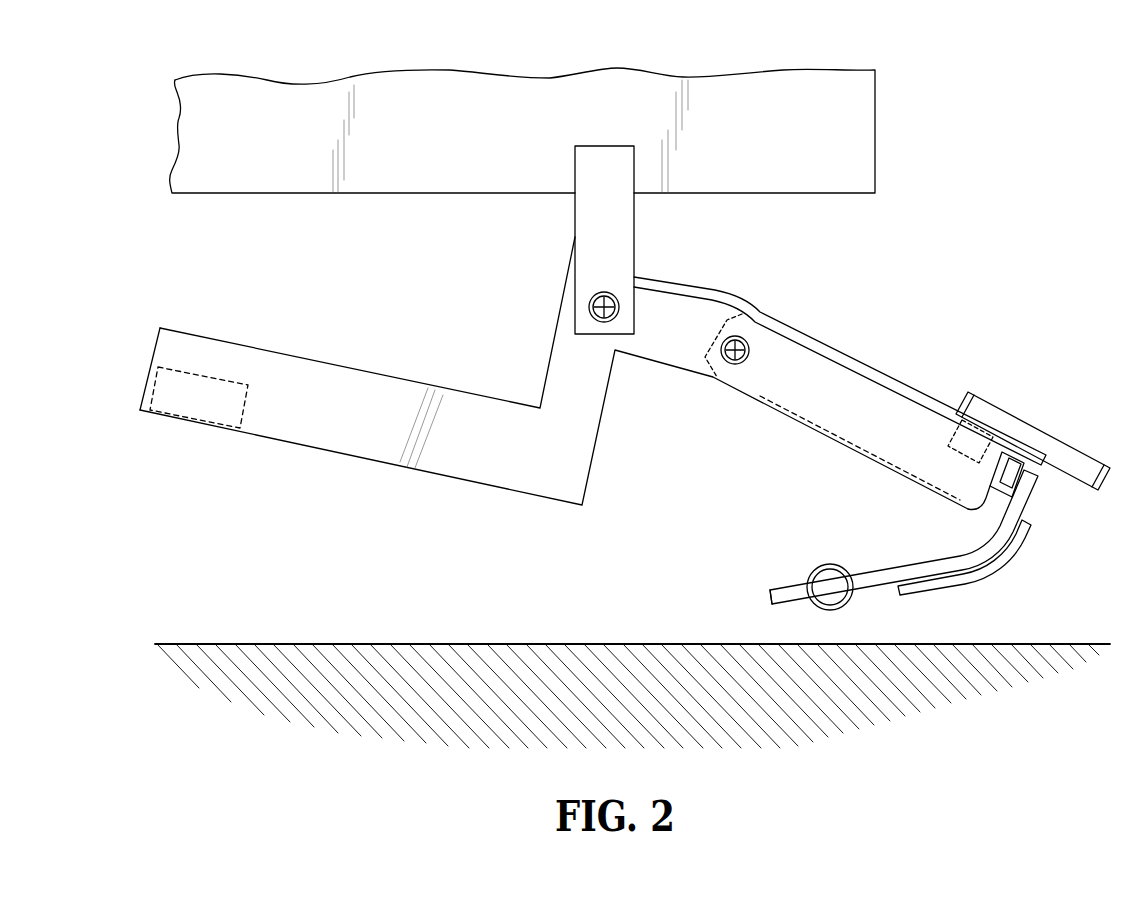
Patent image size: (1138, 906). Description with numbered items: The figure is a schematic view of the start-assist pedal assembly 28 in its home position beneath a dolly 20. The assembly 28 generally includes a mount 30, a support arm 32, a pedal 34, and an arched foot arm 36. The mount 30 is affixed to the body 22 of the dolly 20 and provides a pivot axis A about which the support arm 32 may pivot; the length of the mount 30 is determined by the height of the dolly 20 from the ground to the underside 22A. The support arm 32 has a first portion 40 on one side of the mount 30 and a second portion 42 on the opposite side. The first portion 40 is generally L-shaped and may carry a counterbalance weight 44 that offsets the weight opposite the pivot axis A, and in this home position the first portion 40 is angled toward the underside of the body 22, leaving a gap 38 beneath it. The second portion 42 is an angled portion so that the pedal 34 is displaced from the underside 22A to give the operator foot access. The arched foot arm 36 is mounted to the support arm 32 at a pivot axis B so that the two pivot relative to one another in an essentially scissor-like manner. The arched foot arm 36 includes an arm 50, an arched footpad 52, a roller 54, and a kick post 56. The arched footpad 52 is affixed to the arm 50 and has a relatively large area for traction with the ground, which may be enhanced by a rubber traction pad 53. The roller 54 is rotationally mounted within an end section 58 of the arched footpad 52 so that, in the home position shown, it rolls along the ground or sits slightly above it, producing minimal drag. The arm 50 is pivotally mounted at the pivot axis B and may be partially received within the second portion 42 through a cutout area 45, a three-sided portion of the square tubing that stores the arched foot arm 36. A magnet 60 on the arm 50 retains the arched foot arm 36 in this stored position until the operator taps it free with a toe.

The dolly 20 is at (537, 132).
The body 22 is at (522, 140).
The underside 22A is at (779, 198).
The start-assist pedal assembly 28 is at (955, 311).
The mount 30 is at (638, 262).
The support arm 32 is at (524, 373).
The pedal 34 is at (1029, 429).
The arched foot arm 36 is at (933, 596).
The gap 38 is at (516, 547).
The first portion 40 is at (524, 373).
The second portion 42 is at (894, 372).
The counterbalance weight 44 is at (150, 378).
The cutout area 45 is at (832, 412).
The arm 50 is at (728, 392).
The arched footpad 52 is at (877, 540).
The traction pad 53 is at (975, 574).
The roller 54 is at (818, 568).
The kick post 56 is at (1012, 487).
The end section 58 is at (782, 597).
The magnet 60 is at (985, 455).
The pivot axis A is at (598, 303).
The pivot axis B is at (742, 345).